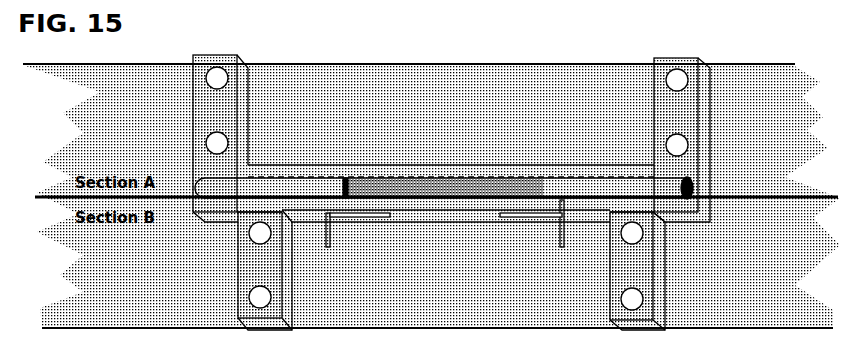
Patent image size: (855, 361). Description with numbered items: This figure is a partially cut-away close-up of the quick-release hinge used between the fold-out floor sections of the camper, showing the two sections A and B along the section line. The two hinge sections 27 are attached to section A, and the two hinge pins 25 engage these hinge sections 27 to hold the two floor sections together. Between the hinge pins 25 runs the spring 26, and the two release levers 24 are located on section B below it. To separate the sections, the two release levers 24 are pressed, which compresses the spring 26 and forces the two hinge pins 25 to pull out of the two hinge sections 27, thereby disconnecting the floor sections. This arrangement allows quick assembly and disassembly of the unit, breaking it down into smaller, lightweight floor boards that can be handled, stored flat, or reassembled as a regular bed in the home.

The release levers 24 is at (560, 245).
The hinge pins 25 is at (305, 182).
The spring 26 is at (453, 182).
The hinge sections 27 is at (217, 56).